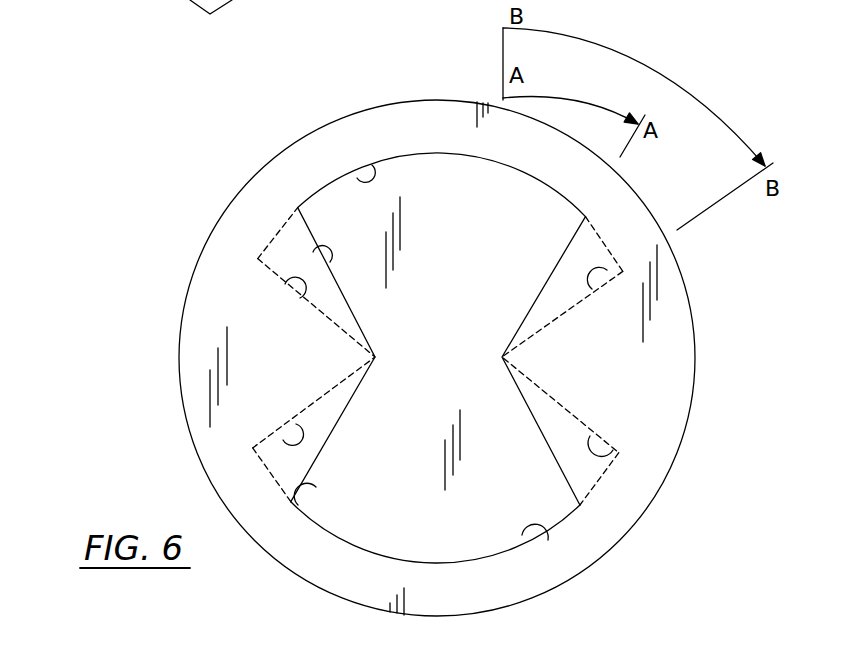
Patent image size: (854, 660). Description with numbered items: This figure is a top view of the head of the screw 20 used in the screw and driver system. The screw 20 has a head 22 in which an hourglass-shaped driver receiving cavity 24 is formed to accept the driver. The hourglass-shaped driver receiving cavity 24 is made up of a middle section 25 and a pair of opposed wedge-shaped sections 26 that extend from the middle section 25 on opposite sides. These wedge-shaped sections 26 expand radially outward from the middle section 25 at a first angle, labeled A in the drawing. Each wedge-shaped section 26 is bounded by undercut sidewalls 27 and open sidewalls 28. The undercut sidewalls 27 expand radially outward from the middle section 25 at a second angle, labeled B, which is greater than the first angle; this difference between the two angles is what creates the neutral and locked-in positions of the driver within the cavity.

The screw 20 is at (138, 297).
The head 22 is at (258, 228).
The hourglass-shaped driver receiving cavity 24 is at (447, 240).
The middle section 25 is at (512, 378).
The opposed wedge-shaped sections 26 is at (316, 249).
The undercut sidewalls 27 is at (285, 284).
The open sidewalls 28 is at (372, 165).